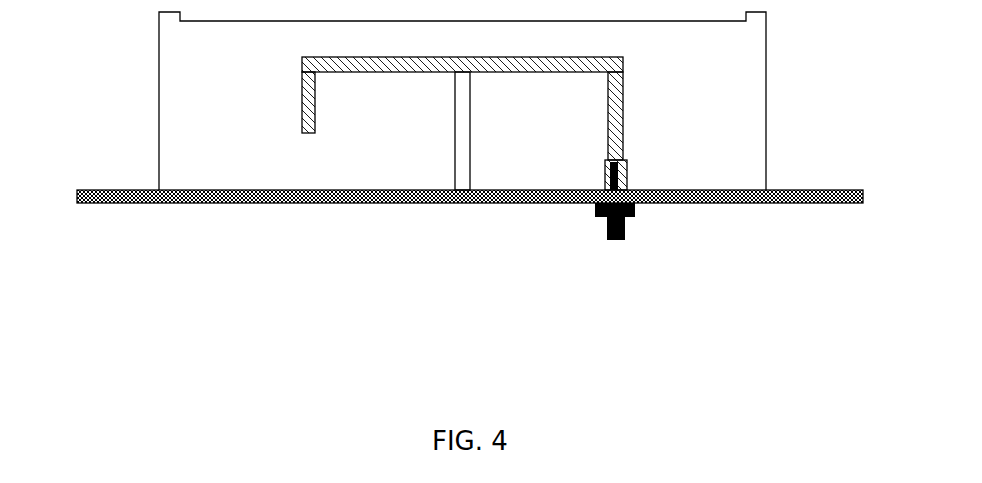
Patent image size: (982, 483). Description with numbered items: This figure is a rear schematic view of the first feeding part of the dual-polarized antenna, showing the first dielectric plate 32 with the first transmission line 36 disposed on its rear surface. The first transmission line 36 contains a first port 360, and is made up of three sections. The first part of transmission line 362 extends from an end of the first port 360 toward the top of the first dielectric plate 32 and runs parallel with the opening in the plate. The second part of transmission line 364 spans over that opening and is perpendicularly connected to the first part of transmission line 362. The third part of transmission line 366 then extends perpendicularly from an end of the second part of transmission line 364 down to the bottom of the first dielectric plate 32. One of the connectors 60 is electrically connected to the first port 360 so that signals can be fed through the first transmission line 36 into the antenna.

The first dielectric plate 32 is at (240, 143).
The first transmission line 36 is at (464, 213).
The first port 360 is at (597, 237).
The first part of transmission line 362 is at (608, 112).
The second part of transmission line 364 is at (419, 68).
The third part of transmission line 366 is at (317, 115).
The connectors 60 is at (627, 216).